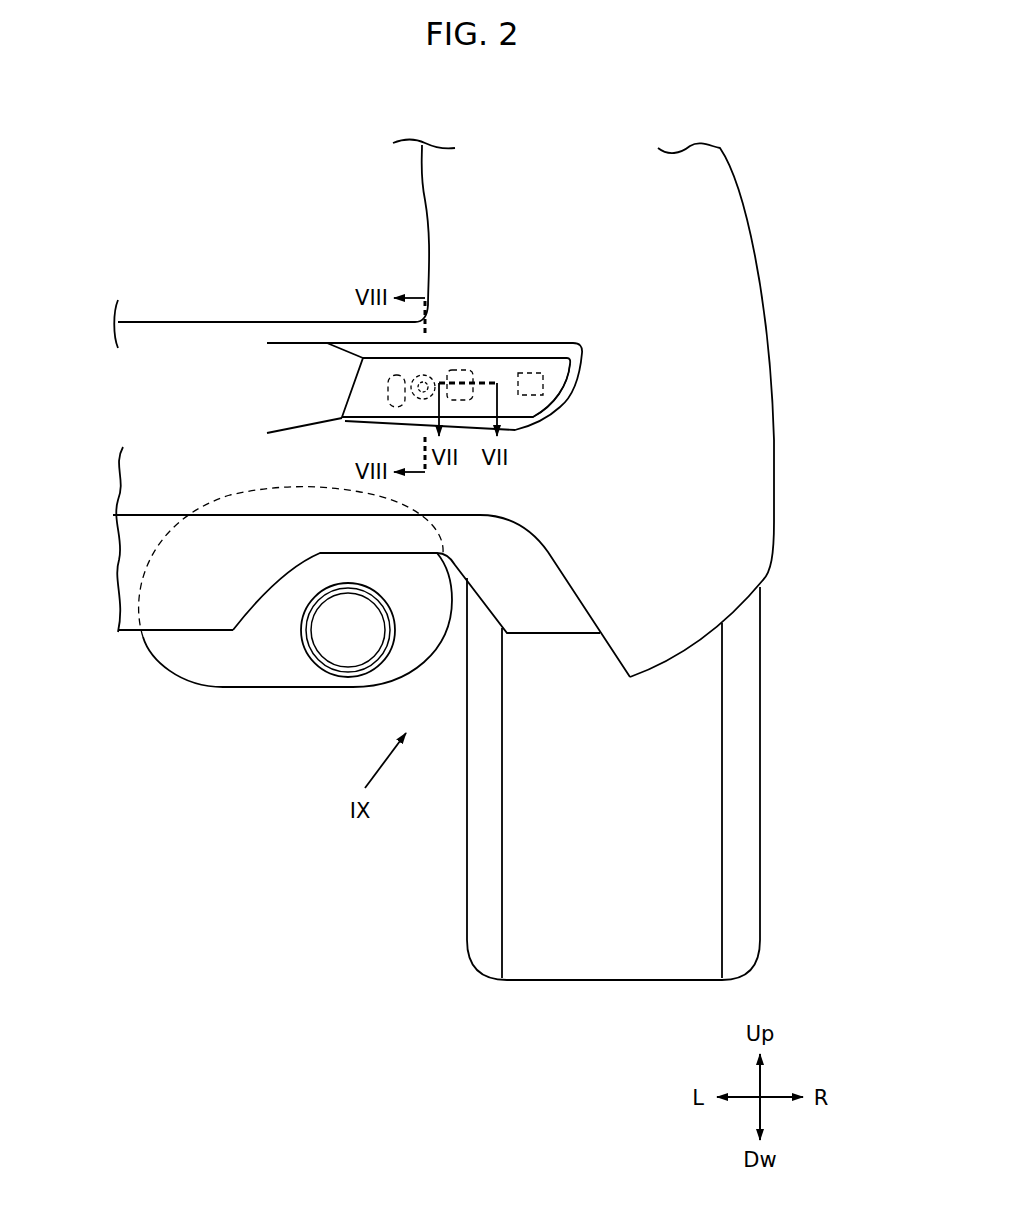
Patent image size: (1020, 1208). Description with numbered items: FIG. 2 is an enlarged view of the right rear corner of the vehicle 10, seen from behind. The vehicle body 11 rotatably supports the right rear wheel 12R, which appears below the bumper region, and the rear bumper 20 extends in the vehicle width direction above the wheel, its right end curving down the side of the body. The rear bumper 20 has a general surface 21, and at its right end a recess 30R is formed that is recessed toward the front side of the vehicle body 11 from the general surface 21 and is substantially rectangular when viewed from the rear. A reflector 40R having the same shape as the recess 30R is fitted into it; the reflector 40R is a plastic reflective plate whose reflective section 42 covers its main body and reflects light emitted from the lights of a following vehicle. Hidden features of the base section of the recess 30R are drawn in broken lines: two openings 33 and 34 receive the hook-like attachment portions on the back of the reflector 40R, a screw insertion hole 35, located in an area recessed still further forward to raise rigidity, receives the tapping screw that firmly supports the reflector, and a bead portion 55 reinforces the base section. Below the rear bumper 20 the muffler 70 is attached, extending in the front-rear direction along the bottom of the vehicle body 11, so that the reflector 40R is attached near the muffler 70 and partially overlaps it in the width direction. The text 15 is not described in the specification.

The vehicle 10 is at (135, 166).
The vehicle body 11 is at (127, 636).
The right rear wheel 12R is at (587, 967).
The roof 15 is at (245, 280).
The rear bumper 20 is at (752, 216).
The general surface 21 is at (473, 173).
The recess 30R is at (502, 361).
The opening 33 is at (541, 349).
The opening 34 is at (470, 372).
The screw insertion hole 35 is at (430, 378).
The reflector 40R is at (349, 382).
The reflective section 42 is at (532, 403).
The bead portion 55 is at (385, 387).
The muffler 70 is at (221, 690).